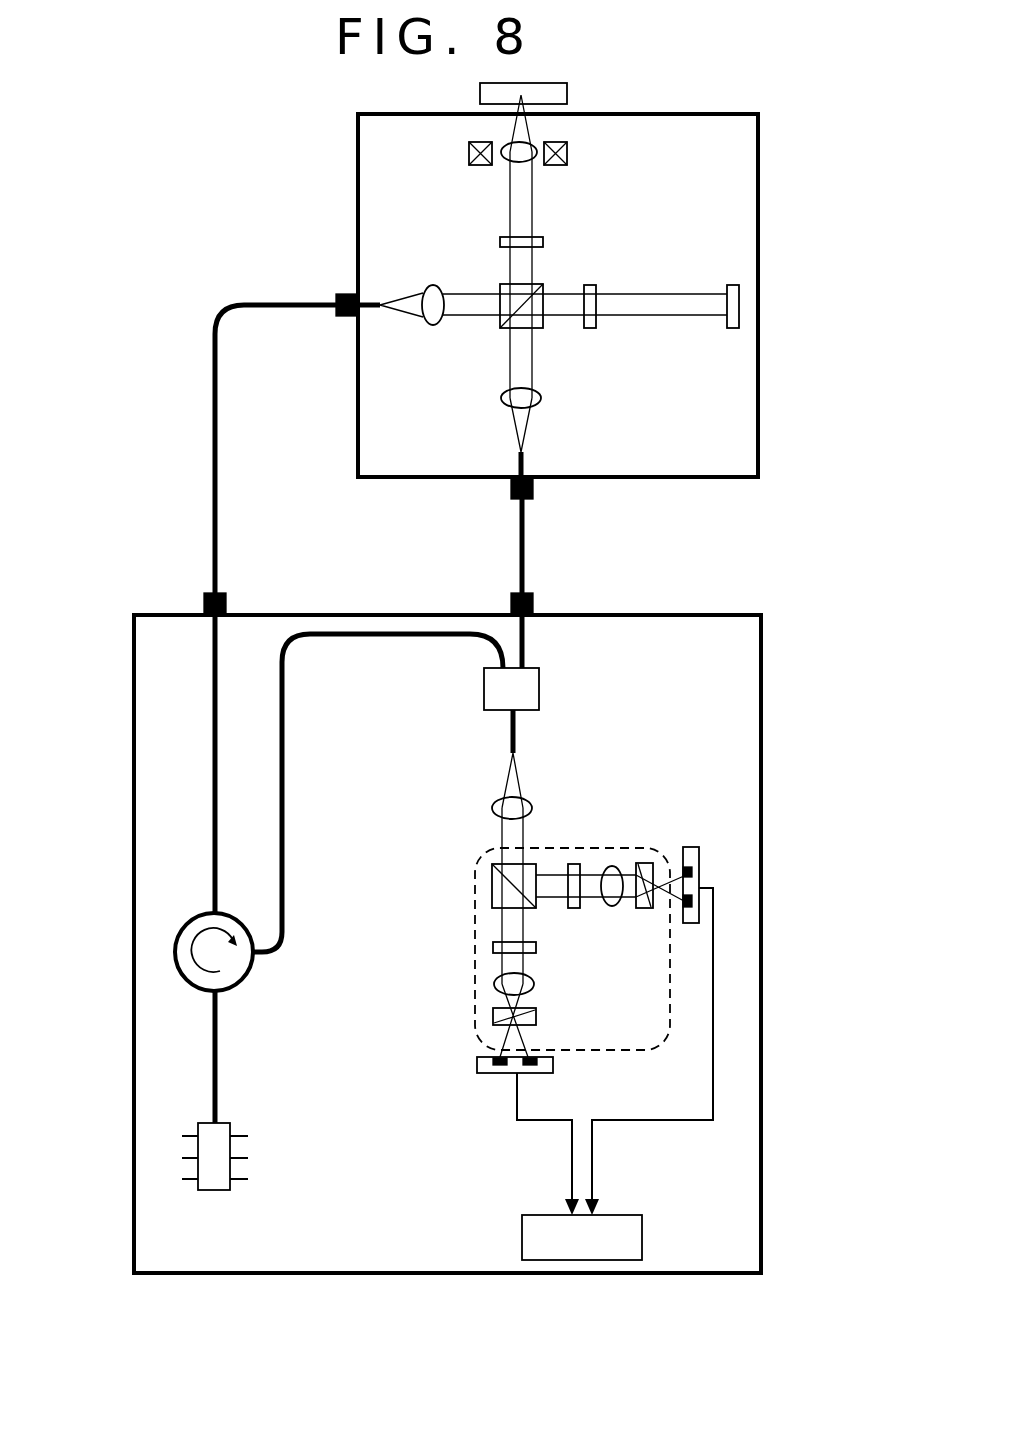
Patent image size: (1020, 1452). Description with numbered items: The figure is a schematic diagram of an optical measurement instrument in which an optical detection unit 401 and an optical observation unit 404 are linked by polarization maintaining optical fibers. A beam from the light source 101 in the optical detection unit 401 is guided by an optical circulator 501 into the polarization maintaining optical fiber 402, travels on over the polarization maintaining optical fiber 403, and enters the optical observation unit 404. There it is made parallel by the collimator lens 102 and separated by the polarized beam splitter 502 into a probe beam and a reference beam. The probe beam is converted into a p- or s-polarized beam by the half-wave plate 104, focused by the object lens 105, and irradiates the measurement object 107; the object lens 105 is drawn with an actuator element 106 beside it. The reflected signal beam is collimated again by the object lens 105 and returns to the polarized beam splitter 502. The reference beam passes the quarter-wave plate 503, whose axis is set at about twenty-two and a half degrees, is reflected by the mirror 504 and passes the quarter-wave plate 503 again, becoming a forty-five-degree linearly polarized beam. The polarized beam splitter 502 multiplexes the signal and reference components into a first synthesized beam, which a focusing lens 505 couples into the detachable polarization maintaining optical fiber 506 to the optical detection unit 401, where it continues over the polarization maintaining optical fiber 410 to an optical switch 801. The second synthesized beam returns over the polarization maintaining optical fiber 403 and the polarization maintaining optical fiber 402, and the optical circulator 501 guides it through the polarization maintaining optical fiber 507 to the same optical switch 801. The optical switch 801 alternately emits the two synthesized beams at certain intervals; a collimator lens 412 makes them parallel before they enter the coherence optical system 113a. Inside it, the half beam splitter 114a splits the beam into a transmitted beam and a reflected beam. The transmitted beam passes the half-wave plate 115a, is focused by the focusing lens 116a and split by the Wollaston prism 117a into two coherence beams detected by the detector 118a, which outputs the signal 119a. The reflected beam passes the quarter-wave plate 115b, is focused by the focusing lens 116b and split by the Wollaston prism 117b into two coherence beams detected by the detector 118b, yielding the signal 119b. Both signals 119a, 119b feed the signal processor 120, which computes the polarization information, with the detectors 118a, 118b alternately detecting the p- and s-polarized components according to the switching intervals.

The light source 101 is at (219, 1190).
The collimator lens 102 is at (424, 294).
The λ/2 plate 104 is at (500, 241).
The object lens 105 is at (530, 150).
The lens actuator 106 is at (567, 153).
The measurement object 107 is at (480, 95).
The first coherence optical system 113a is at (478, 1046).
The half beam splitter 114a is at (495, 865).
The λ/2 plate 115a is at (536, 948).
The λ/4 plate 115b is at (574, 863).
The focusing lens 116a is at (534, 984).
The focusing lens 116b is at (609, 866).
The Wollaston prism 117a is at (536, 1016).
The Wollaston prism 117b is at (647, 862).
The detector 118a is at (553, 1065).
The current differential type detector 118b is at (694, 847).
The signal 119a is at (518, 1097).
The signal 119b is at (678, 1120).
The signal processor 120 is at (522, 1228).
The optical detection unit 401 is at (134, 1040).
The polarization maintaining optical fiber 402 is at (212, 745).
The polarization maintaining optical fiber 403 is at (214, 478).
The optical observation unit 404 is at (357, 165).
The polarization maintaining optical fiber 410 is at (524, 637).
The collimator lens 412 is at (524, 800).
The optical circulator 501 is at (245, 981).
The polarized beam splitter 502 is at (500, 292).
The λ/4 plate 503 is at (590, 285).
The mirror 504 is at (731, 285).
The focusing lens 505 is at (541, 397).
The polarization maintaining optical fiber 506 is at (524, 560).
The polarization maintaining optical fiber 507 is at (283, 858).
The optical switch 801 is at (484, 694).